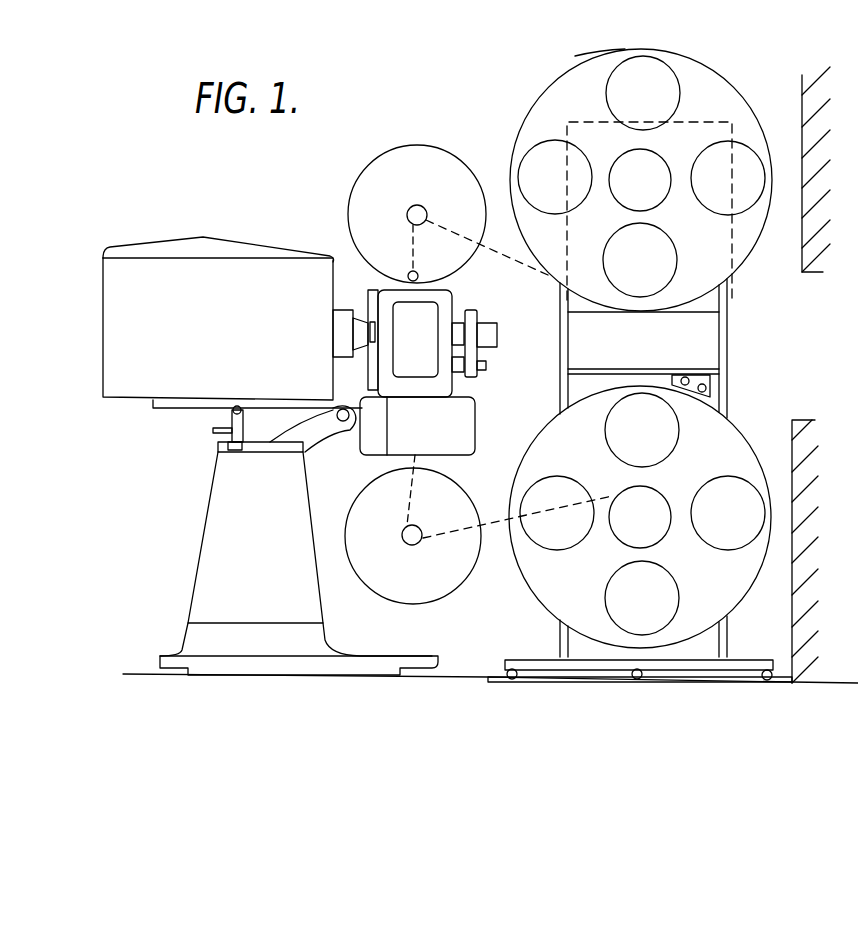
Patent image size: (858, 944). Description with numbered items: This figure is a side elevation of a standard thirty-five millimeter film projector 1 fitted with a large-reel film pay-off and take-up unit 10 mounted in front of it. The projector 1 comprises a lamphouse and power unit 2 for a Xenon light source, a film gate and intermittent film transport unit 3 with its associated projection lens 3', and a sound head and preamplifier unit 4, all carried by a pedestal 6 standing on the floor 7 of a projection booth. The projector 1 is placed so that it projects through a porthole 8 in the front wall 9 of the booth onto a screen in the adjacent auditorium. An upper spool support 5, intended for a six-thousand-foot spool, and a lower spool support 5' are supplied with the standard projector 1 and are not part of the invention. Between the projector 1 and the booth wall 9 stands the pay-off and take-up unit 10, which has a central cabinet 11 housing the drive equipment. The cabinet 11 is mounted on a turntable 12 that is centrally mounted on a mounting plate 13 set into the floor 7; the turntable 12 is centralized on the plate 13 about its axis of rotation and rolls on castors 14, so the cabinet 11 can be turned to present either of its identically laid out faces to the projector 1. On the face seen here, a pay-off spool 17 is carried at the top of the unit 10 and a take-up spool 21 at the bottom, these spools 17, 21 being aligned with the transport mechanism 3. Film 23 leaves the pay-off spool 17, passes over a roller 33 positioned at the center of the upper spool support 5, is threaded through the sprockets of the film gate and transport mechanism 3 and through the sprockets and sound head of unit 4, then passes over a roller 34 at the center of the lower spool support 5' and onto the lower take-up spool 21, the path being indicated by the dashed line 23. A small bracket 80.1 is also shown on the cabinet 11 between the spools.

The film projector 1 is at (203, 233).
The lamphouse and power unit 2 is at (137, 388).
The film gate and intermittent film transport unit 3 is at (392, 327).
The projection lens 3' is at (484, 334).
The sound head and preamplifier unit 4 is at (466, 417).
The upper spool support 5 is at (417, 200).
The lower spool support 5' is at (417, 529).
The pedestal 6 is at (213, 493).
The floor 7 is at (130, 668).
The porthole 8 is at (810, 292).
The front wall 9 is at (802, 105).
The film pay-off and take-up unit 10 is at (747, 95).
The central cabinet 11 is at (595, 118).
The turntable 12 is at (748, 662).
The mounting plate 13 is at (495, 672).
The castors 14 is at (513, 670).
The pay-off spool 17 is at (580, 63).
The take-up spool 21 is at (742, 433).
The film 23 is at (502, 247).
The roller 33 is at (414, 208).
The roller 34 is at (410, 545).
The adjusting bracket 80.1 is at (697, 380).